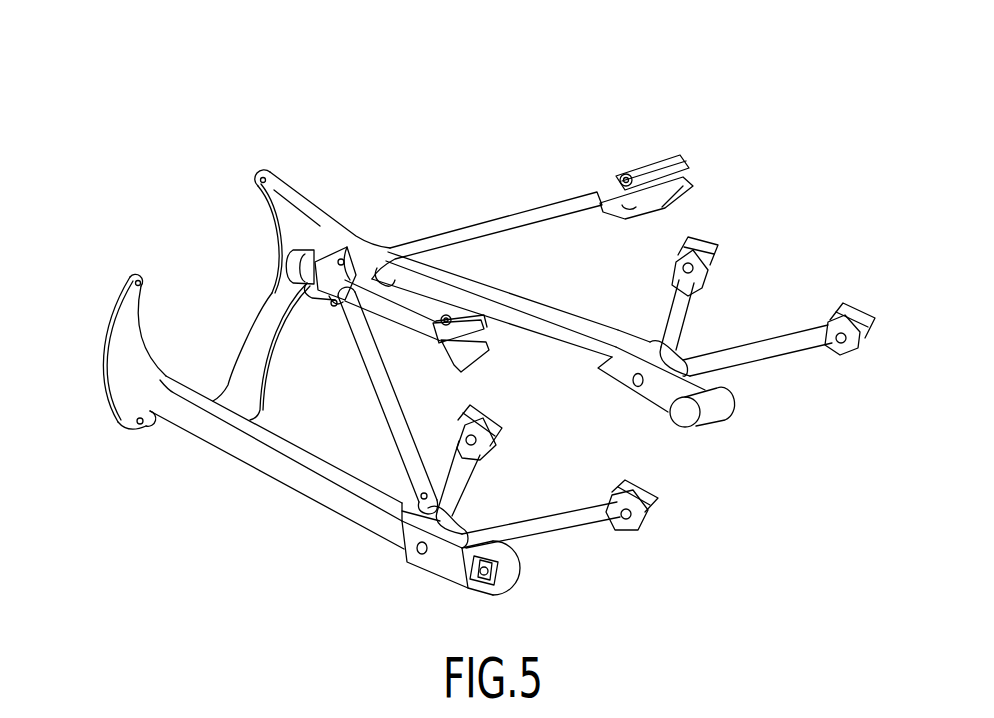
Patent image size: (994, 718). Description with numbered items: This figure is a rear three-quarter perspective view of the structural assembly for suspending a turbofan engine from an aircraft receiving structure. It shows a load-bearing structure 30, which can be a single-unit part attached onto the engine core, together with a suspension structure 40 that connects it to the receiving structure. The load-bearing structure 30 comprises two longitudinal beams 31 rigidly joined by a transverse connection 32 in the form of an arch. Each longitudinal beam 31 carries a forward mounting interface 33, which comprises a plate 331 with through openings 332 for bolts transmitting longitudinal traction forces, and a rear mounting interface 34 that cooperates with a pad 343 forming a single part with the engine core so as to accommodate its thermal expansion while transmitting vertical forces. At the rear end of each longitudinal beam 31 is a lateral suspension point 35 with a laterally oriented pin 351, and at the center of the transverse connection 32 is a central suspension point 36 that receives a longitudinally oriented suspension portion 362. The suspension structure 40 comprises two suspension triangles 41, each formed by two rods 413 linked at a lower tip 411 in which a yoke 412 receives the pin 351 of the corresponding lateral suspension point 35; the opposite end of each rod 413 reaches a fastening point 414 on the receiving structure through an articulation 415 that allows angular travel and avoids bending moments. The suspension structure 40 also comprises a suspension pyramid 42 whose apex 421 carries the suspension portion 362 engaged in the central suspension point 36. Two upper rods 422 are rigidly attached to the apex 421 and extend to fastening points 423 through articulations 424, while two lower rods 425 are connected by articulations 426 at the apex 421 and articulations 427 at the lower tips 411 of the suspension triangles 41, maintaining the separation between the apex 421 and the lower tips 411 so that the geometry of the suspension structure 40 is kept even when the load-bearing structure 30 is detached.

The load-bearing structure 30 is at (186, 446).
The longitudinal beams 31 is at (248, 462).
The transverse connection 32 is at (253, 330).
The forward mounting interface 33 is at (266, 240).
The plate 331 is at (128, 288).
The through openings 332 is at (145, 280).
The rear mounting interface 34 is at (490, 590).
The pad 343 is at (690, 412).
The lateral suspension point 35 is at (405, 560).
The pin 351 is at (423, 555).
The central suspension point 36 is at (311, 248).
The suspension portion 362 is at (343, 255).
The suspension structure 40 is at (627, 93).
The suspension triangles 41 is at (763, 291).
The lower tip 411 is at (452, 520).
The yokes 412 is at (400, 518).
The rods 413 is at (470, 470).
The fastening point 414 is at (485, 413).
The articulation 415 is at (465, 430).
The suspension pyramid 42 is at (566, 177).
The apex 421 is at (300, 290).
The upper rods 422 is at (492, 225).
The fastening points 423 is at (701, 163).
The articulations 424 is at (634, 203).
The lower rods 425 is at (513, 300).
The articulation 426 is at (330, 305).
The articulation 427 is at (422, 488).